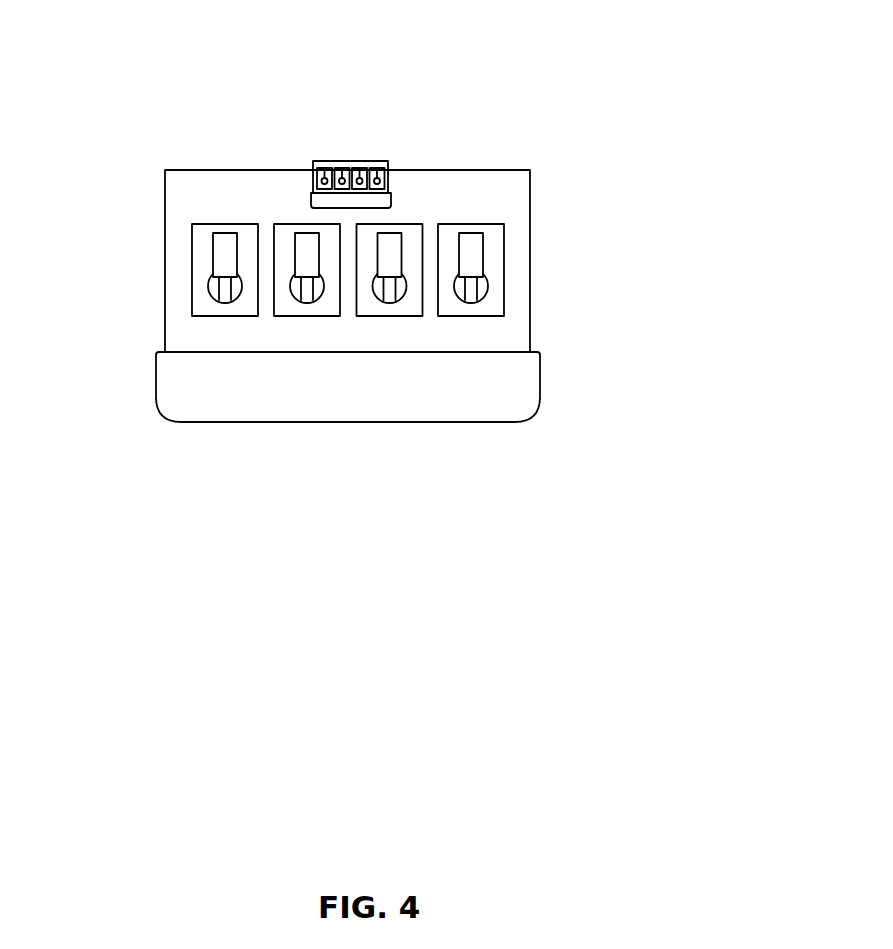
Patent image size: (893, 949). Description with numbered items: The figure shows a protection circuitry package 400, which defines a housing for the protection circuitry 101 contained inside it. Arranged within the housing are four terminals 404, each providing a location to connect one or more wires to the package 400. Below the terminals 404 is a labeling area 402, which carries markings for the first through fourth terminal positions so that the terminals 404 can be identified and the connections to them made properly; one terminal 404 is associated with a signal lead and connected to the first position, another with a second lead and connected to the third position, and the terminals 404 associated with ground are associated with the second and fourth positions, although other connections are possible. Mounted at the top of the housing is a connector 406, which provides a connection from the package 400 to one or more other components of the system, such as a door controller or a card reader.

The package 400 is at (341, 78).
The protection circuitry 101 is at (425, 166).
The labeling area 402 is at (175, 386).
The terminals 404 is at (302, 223).
The connector 406 is at (317, 165).